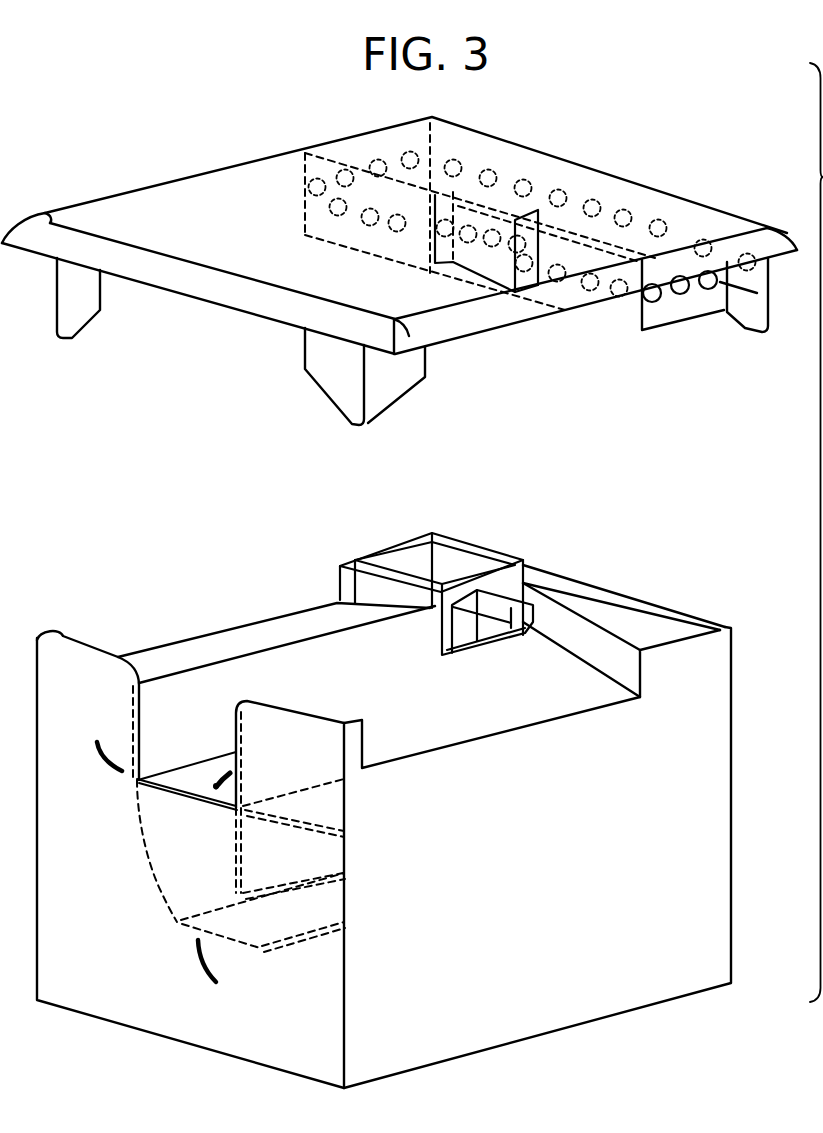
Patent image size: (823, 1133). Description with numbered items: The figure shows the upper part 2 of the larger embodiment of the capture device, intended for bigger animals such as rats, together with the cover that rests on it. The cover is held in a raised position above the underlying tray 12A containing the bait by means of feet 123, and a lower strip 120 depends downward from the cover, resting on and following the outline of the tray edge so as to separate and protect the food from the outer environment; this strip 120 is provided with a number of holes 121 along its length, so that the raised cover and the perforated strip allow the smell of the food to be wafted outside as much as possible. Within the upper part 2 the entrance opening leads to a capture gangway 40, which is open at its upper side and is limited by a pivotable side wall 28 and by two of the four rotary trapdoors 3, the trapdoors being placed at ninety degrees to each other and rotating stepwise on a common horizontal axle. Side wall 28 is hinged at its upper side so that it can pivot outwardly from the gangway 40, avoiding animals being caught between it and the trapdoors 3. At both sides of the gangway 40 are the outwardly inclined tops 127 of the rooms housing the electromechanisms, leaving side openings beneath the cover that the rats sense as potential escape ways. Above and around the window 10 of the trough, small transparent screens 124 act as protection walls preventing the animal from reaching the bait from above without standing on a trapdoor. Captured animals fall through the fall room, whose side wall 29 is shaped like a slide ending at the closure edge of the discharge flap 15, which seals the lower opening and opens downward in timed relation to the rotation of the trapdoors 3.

The upper part 2 is at (572, 871).
The rotary trapdoors 3 is at (281, 866).
The window 10 is at (457, 630).
The tray 12A is at (570, 590).
The discharge flap 15 is at (298, 933).
The pivotable side wall 28 is at (200, 724).
The side wall of fall room 29 is at (202, 874).
The gangway 40 is at (131, 783).
The lower strip 120 is at (715, 303).
The holes 121 is at (707, 290).
The feet 123 is at (747, 312).
The screens 124 is at (468, 548).
The tops 127 is at (468, 708).